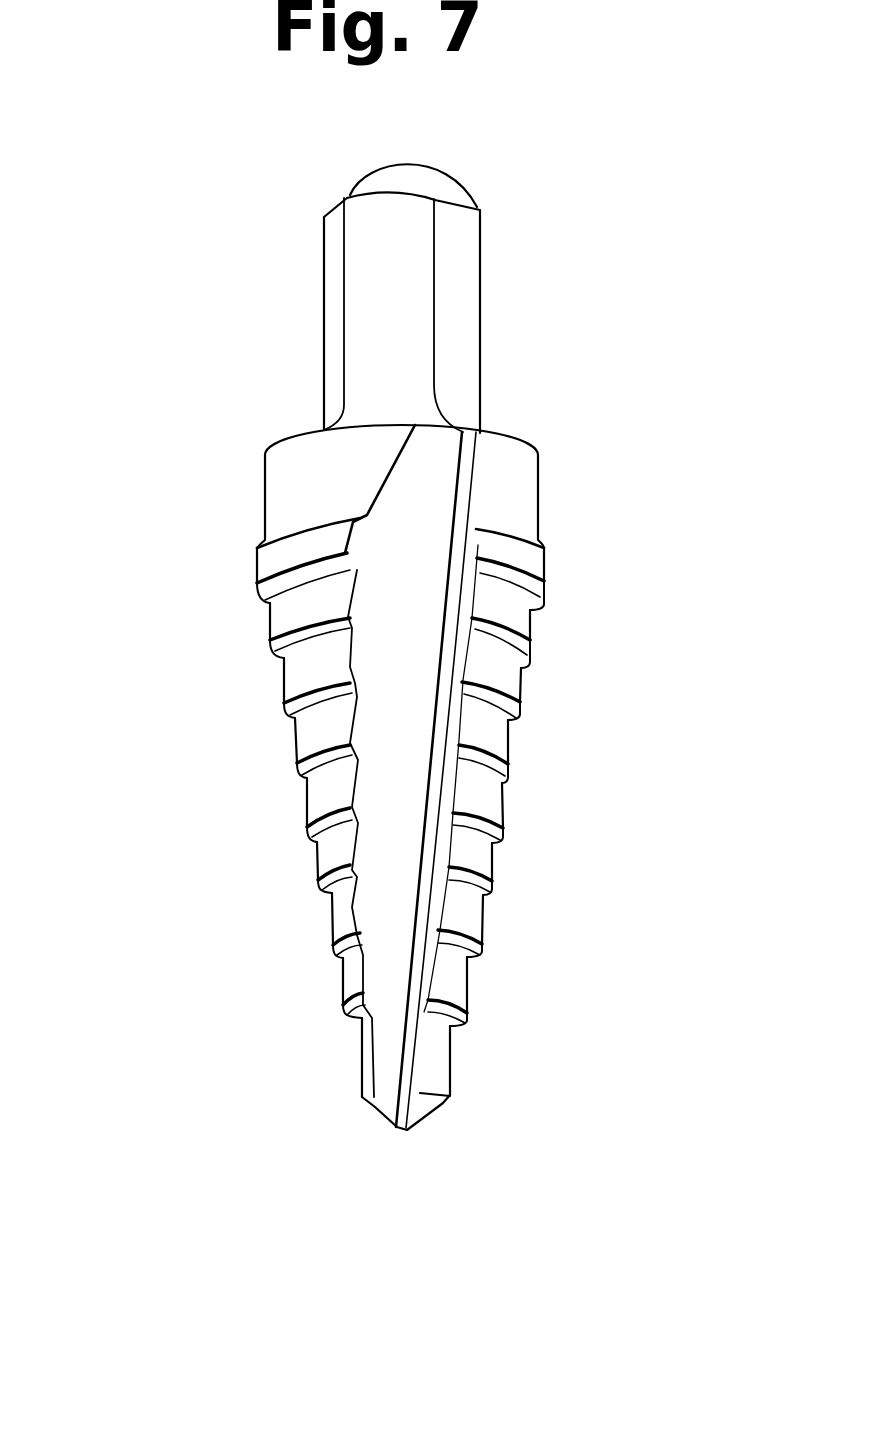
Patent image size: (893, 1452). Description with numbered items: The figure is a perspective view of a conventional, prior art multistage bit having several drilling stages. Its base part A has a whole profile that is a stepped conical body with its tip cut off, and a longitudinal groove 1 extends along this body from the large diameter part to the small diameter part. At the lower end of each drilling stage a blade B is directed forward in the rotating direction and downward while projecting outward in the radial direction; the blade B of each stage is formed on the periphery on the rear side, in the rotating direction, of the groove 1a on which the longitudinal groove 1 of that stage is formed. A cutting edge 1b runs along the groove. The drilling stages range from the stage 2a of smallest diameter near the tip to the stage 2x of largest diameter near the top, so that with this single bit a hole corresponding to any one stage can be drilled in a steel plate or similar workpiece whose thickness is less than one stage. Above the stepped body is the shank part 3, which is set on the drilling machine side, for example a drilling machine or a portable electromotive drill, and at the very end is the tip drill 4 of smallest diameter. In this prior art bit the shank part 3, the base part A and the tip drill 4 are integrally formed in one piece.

The longitudinal groove 1 is at (384, 1073).
The groove 1a is at (420, 837).
The cutting edge 1b is at (436, 845).
The stage of largest diameter 2x is at (268, 633).
The stage of smallest diameter 2a is at (345, 982).
The shank part 3 is at (327, 327).
The tip drill 4 is at (367, 1050).
The base part A is at (287, 687).
The blade B is at (510, 745).